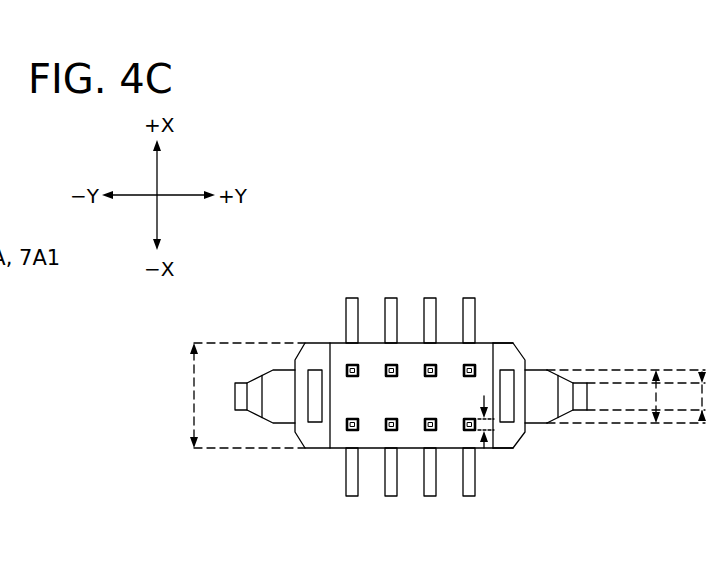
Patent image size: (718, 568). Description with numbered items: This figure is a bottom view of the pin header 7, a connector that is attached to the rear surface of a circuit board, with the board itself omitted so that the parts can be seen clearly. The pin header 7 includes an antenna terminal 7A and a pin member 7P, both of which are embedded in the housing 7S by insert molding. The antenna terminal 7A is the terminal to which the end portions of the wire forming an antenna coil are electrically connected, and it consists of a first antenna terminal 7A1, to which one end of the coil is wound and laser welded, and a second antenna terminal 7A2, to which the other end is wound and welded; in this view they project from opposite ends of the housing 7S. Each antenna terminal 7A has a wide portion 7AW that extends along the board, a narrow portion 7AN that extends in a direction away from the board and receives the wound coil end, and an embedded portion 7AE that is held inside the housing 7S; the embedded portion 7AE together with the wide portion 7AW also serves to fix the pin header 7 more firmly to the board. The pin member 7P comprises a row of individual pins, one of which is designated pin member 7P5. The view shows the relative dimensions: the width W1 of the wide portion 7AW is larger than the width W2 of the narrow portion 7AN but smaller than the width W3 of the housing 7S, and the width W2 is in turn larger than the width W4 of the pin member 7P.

The pin header 7 is at (536, 256).
The housing 7S is at (512, 368).
The antenna terminal 7A is at (439, 389).
The first antenna terminal 7A1 is at (550, 362).
The second antenna terminal 7A2 is at (256, 362).
The embedded portion 7AE is at (507, 418).
The wide portion 7AW is at (538, 424).
The narrow portion 7AN is at (580, 411).
The pin member 7P is at (411, 458).
The pin member 7P5 is at (465, 431).
The width of the wide portion W1 is at (646, 396).
The width of the narrow portion W2 is at (666, 388).
The width of the housing W3 is at (235, 395).
The width of the pin member W4 is at (499, 432).